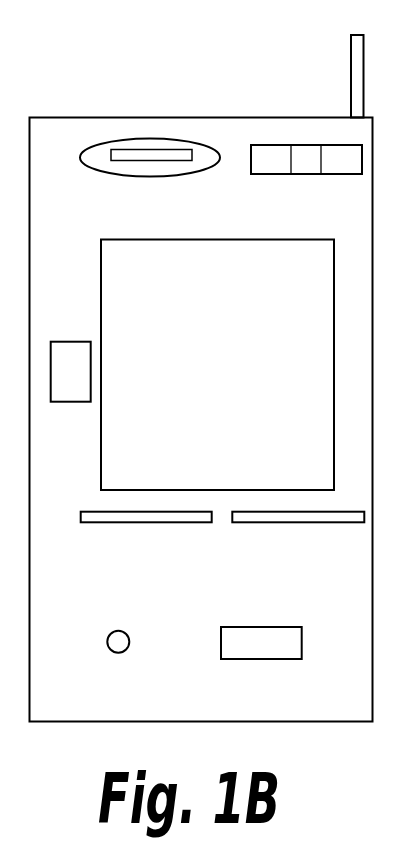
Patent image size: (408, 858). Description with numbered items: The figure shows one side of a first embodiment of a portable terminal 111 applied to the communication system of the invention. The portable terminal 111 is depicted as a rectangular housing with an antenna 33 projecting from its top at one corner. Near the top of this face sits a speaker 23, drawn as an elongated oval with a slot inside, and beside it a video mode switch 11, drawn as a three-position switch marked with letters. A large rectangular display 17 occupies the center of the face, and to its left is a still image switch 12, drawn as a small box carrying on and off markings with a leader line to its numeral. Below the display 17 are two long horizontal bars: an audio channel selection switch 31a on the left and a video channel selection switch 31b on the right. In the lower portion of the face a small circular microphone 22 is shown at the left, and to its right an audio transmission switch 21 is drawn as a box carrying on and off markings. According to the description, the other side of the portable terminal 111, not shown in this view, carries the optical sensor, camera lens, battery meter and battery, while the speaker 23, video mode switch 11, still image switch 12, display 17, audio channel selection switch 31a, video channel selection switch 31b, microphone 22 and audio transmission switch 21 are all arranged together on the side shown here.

The portable terminal 111 is at (132, 117).
The antenna 33 is at (351, 70).
The speaker 23 is at (152, 172).
The video mode switch 11 is at (307, 174).
The display 17 is at (227, 378).
The still image switch 12 is at (72, 402).
The audio channel selection switch 31a is at (162, 522).
The video channel selection switch 31b is at (320, 522).
The microphone 22 is at (128, 632).
The audio transmission switch 21 is at (262, 627).